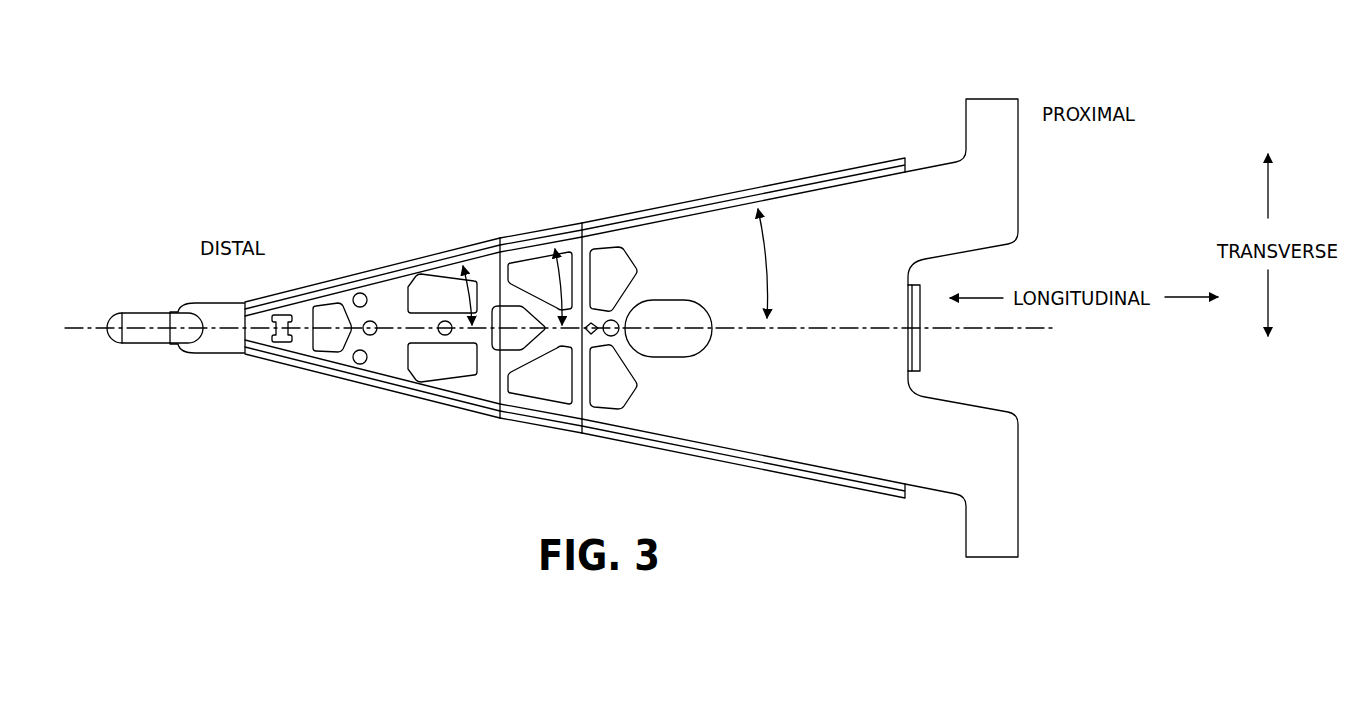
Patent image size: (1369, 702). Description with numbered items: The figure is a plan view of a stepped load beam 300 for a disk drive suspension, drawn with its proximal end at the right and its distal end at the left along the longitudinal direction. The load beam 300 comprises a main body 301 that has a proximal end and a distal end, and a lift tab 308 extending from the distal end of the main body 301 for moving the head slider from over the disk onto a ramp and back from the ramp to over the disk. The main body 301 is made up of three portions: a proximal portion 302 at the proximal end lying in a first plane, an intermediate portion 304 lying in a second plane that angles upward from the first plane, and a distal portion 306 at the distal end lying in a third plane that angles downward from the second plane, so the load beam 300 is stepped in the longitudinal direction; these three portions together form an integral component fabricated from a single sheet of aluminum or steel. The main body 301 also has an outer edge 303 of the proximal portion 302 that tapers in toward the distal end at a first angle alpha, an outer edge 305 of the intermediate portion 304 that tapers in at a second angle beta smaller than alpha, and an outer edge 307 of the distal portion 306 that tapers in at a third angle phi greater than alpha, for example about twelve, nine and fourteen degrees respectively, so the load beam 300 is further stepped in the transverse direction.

The load beam 300 is at (308, 131).
The main body 301 is at (977, 460).
The proximal portion 302 is at (750, 435).
The outer edge of the proximal portion 303 is at (750, 192).
The intermediate portion 304 is at (540, 403).
The outer edge of the intermediate portion 305 is at (552, 233).
The distal portion 306 is at (385, 357).
The outer edge of the distal portion 307 is at (400, 262).
The lift tab 308 is at (150, 345).